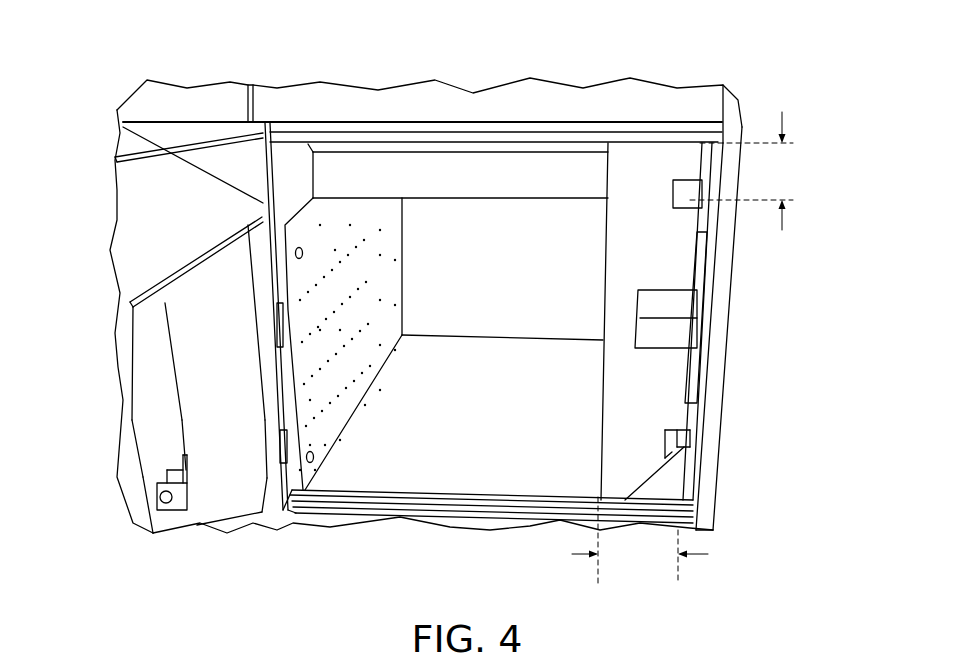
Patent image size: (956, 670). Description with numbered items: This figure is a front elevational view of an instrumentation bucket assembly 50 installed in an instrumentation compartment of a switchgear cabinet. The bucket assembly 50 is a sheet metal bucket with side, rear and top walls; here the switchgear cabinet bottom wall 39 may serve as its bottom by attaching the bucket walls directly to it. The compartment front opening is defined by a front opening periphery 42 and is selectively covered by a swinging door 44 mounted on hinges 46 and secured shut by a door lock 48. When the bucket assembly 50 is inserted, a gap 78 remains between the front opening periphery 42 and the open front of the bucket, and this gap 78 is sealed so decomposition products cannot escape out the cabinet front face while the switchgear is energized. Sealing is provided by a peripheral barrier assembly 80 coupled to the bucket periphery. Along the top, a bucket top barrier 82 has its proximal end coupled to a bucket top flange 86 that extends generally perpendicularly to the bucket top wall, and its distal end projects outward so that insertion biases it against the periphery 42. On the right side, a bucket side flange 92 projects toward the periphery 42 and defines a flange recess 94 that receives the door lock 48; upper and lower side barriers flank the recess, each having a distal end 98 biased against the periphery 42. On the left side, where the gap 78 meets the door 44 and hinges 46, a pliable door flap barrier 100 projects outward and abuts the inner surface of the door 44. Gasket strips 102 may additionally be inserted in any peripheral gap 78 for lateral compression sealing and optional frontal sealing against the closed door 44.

The switchgear cabinet bottom wall 39 is at (568, 515).
The front opening periphery 42 is at (484, 127).
The swinging door 44 is at (147, 235).
The hinges 46 is at (262, 203).
The door lock 48 is at (170, 510).
The instrumentation bucket assembly 50 is at (378, 460).
The gap 78 is at (775, 175).
The peripheral barrier assembly 80 is at (310, 117).
The bucket top barrier 82 is at (388, 148).
The bucket top flange 86 is at (338, 178).
The bucket side flange 92 is at (685, 420).
The flange recess 94 is at (648, 328).
The distal end 98 is at (700, 258).
The door flap barrier 100 is at (123, 127).
The gasket strips 102 is at (592, 135).